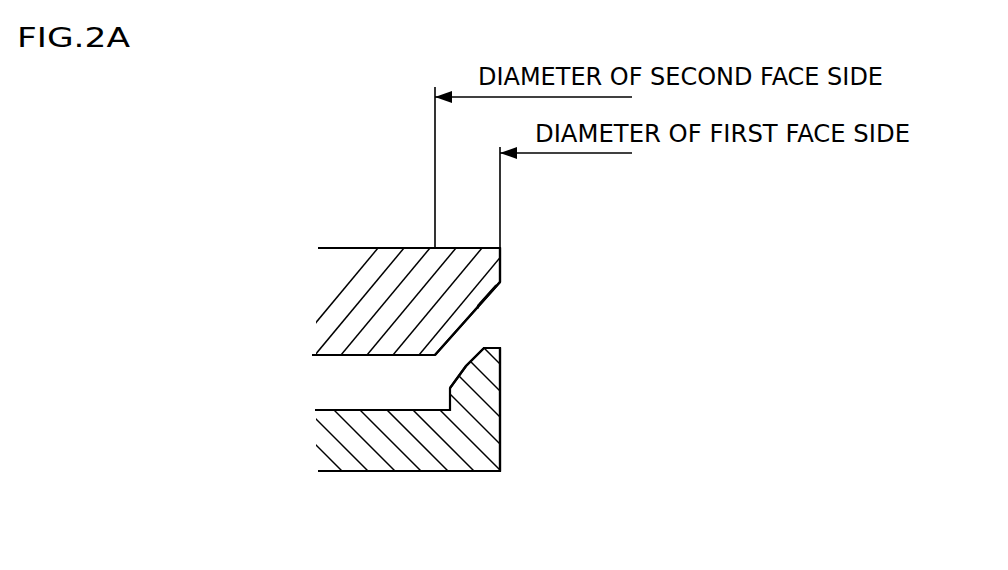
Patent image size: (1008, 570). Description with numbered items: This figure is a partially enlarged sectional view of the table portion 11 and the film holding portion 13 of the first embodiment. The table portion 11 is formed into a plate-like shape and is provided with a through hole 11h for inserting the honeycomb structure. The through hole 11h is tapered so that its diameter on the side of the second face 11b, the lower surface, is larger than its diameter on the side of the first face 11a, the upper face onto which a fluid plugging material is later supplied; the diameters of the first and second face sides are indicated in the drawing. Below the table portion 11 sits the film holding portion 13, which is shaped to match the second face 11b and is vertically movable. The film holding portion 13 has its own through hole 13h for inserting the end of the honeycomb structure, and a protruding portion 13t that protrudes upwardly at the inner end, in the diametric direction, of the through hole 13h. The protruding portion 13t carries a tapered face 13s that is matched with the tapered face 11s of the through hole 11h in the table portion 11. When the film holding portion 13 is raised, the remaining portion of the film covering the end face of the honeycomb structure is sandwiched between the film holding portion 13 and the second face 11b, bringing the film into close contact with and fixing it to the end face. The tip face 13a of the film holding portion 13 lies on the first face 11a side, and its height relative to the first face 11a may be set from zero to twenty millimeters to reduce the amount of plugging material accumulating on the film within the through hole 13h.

The table portion 11 is at (397, 255).
The first face 11a is at (352, 247).
The second face 11b is at (330, 355).
The through hole 11h is at (502, 252).
The tapered face 11s is at (493, 302).
The film holding portion 13 is at (385, 445).
The tapered face 13s is at (467, 362).
The tip face 13a is at (489, 348).
The protruding portion 13t is at (482, 380).
The through hole 13h is at (502, 447).